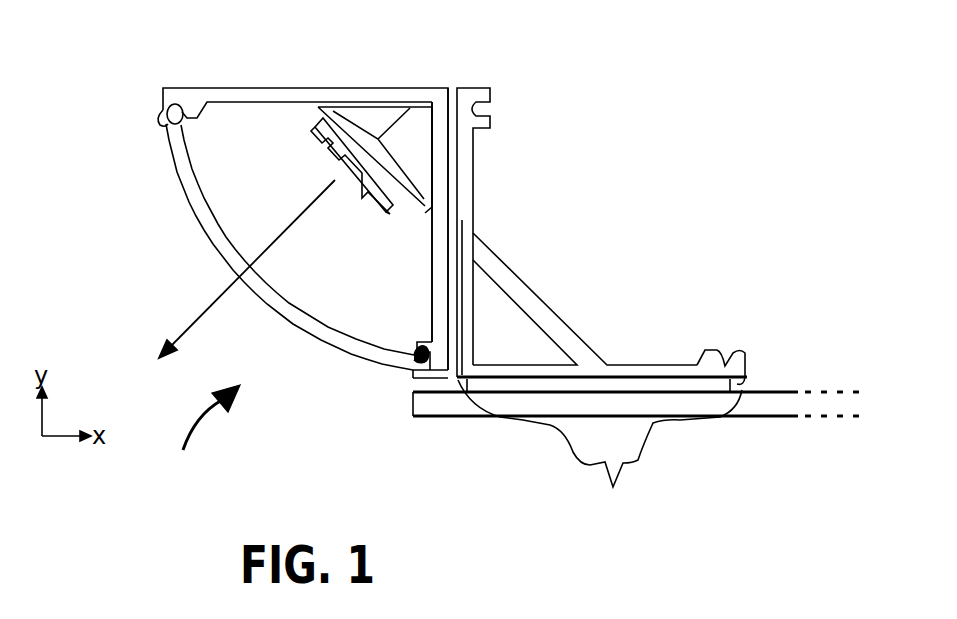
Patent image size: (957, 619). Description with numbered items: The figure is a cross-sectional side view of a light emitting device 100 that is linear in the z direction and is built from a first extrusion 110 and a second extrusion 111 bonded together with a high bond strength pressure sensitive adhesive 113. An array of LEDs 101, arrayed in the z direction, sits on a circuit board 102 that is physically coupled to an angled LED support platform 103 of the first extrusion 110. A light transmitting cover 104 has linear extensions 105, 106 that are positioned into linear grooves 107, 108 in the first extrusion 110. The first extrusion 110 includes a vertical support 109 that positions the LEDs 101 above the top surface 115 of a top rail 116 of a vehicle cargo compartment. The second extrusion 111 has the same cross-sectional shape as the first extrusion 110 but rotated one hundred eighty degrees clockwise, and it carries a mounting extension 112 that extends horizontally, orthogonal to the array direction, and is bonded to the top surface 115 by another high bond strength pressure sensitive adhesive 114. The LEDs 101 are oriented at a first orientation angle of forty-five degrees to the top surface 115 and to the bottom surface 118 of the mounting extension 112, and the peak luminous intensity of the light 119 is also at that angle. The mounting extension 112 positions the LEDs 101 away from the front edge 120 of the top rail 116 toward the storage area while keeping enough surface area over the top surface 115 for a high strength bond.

The light emitting device 100 is at (197, 435).
The array of LEDs 101 is at (325, 166).
The circuit board 102 is at (306, 136).
The angled LED support platform 103 is at (402, 117).
The light transmitting cover 104 is at (188, 222).
The linear extension 105 is at (168, 122).
The linear extension 106 is at (422, 357).
The linear groove 107 is at (186, 102).
The linear groove 108 is at (432, 357).
The vertical support 109 is at (437, 289).
The first extrusion 110 is at (213, 92).
The second extrusion 111 is at (468, 158).
The mounting extension 112 is at (600, 448).
The high bond strength pressure sensitive adhesive 113 is at (455, 217).
The high bond strength pressure sensitive adhesive 114 is at (678, 384).
The top surface 115 is at (773, 392).
The top rail 116 is at (750, 405).
The bottom surface 118 is at (745, 384).
The light 119 is at (217, 298).
The front edge 120 is at (413, 403).